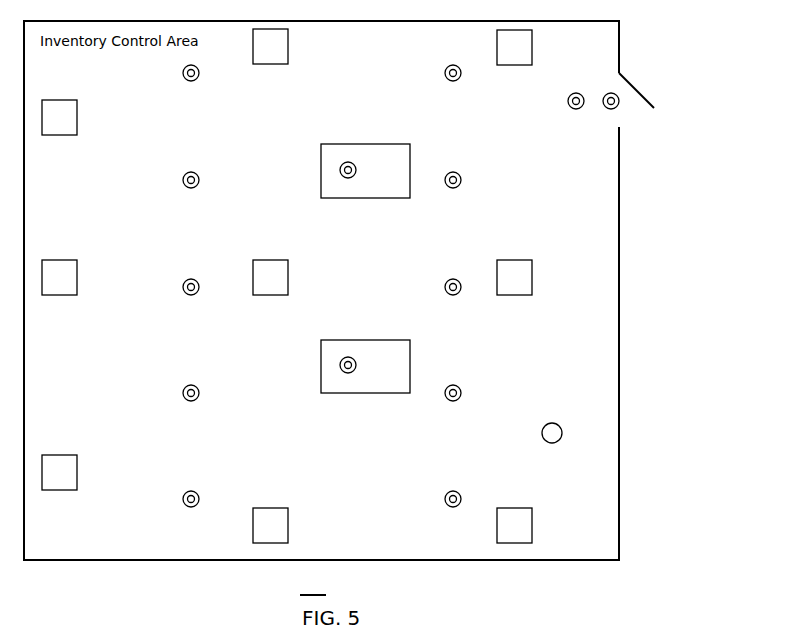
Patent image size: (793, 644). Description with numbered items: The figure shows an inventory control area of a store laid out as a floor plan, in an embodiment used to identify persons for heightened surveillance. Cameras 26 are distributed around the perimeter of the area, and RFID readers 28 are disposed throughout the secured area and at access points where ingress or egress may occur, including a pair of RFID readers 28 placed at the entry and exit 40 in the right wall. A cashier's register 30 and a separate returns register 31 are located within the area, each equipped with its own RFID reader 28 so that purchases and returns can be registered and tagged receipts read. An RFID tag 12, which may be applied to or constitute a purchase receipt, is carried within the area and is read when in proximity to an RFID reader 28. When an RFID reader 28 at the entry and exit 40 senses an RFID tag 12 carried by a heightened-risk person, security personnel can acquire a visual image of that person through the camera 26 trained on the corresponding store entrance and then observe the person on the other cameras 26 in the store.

The RFID tag 12 is at (541, 437).
The camera 26 is at (70, 135).
The RFID reader 28 is at (196, 80).
The cashier's register 30 is at (377, 144).
The returns register 31 is at (370, 340).
The entry and exit 40 is at (637, 128).